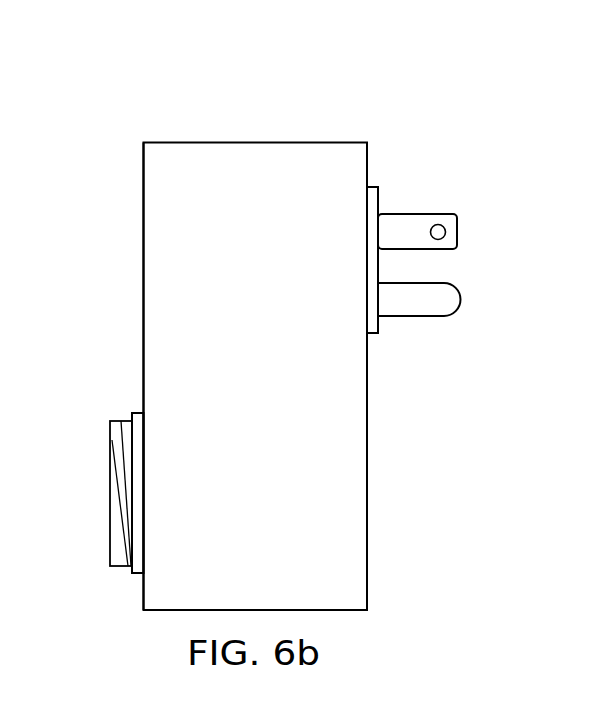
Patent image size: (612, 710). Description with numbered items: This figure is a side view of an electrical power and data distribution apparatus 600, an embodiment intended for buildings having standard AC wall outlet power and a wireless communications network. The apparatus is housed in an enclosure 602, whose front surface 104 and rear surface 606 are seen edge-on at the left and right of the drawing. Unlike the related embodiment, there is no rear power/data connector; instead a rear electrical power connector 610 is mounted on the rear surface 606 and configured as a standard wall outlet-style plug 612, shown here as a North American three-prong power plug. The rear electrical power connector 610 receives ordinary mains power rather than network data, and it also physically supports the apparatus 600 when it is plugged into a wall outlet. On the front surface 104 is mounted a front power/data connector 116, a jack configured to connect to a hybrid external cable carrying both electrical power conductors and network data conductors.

The distribution apparatus 600 is at (311, 125).
The enclosure 602 is at (274, 392).
The front surface 104 is at (143, 292).
The rear surface 606 is at (367, 527).
The rear electrical power connector 610 is at (444, 192).
The wall outlet-style plug 612 is at (458, 230).
The front power/data connector 116 is at (110, 493).